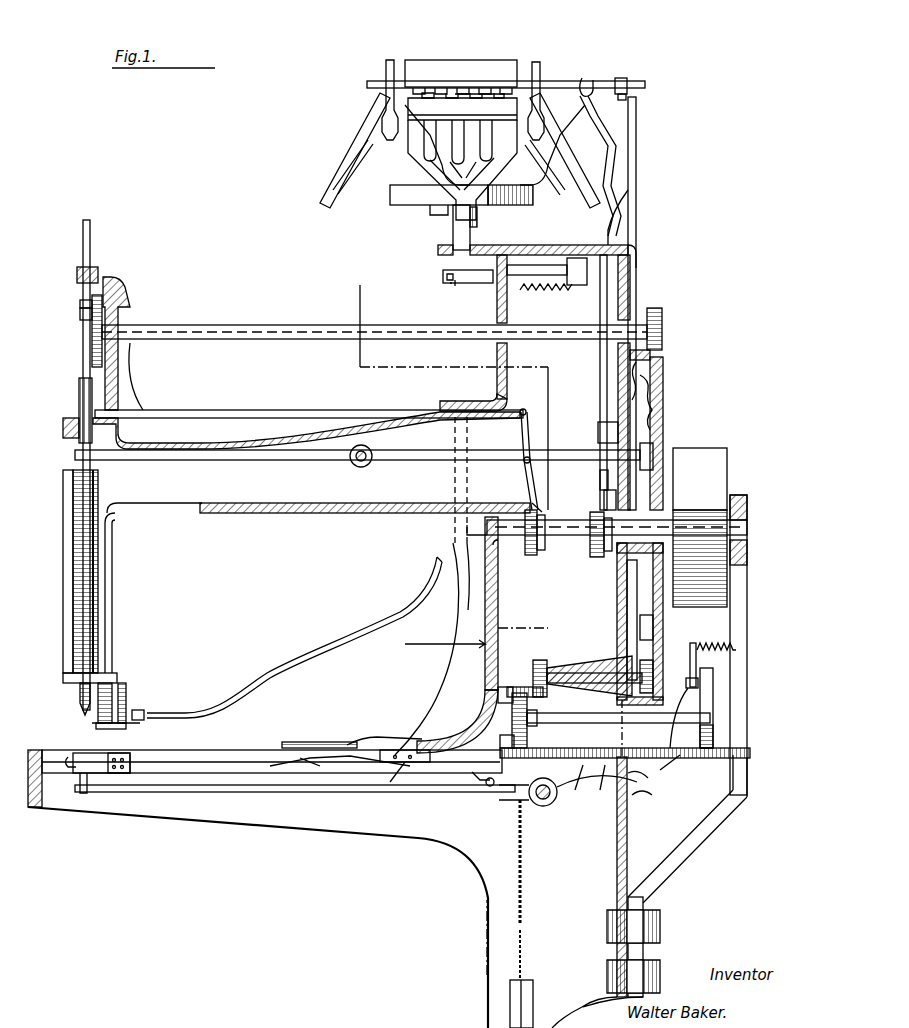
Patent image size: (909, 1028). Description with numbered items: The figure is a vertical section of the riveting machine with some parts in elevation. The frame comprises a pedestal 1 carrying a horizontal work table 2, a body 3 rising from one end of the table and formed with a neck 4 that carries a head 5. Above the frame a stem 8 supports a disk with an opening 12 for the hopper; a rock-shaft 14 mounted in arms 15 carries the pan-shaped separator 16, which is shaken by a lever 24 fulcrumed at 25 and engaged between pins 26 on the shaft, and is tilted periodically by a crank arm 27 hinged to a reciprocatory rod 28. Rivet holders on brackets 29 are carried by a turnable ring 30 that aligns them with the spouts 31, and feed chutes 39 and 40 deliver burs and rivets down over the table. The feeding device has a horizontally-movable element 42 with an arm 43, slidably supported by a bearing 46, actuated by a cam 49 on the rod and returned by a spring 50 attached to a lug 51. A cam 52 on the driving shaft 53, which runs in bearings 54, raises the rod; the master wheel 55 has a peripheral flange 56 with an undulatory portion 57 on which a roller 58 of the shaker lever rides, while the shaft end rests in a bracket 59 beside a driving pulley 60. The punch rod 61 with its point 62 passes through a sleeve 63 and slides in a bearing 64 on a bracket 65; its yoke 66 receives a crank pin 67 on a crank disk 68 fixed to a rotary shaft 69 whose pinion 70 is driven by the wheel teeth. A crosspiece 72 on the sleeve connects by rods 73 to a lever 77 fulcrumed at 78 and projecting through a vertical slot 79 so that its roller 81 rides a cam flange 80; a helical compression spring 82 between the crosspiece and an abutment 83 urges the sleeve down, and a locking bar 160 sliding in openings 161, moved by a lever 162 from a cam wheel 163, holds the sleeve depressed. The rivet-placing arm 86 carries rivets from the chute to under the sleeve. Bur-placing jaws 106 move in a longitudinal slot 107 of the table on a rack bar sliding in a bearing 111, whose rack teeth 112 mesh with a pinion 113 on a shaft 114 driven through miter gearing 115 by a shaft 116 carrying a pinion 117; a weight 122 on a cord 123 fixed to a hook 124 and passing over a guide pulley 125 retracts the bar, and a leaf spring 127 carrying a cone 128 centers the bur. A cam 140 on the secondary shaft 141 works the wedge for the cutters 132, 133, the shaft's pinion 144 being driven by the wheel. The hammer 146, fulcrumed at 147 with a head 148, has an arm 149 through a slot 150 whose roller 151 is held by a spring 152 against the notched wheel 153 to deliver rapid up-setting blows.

The pedestal 1 is at (485, 960).
The work table 2 is at (268, 824).
The body 3 is at (492, 903).
The neck 4 is at (322, 514).
The head 5 is at (113, 568).
The stem 8 is at (646, 615).
The opening 12 is at (641, 294).
The rock-shaft 14 is at (548, 82).
The arms 15 is at (460, 91).
The separator 16 is at (445, 62).
The lever 24 is at (640, 214).
The fulcrum 25 is at (638, 252).
The pins 26 is at (588, 78).
The crank arm 27 is at (624, 78).
The reciprocatory rod 28 is at (637, 141).
The brackets 29 is at (352, 186).
The ring 30 is at (403, 196).
The spouts 31 is at (470, 90).
The feed chute 39 is at (450, 536).
The feed chute 40 is at (472, 238).
The horizontally-movable element 42 is at (552, 258).
The arm 43 is at (460, 283).
The bearing 46 is at (575, 290).
The cam 49 is at (604, 292).
The spring 50 is at (574, 285).
The lug 51 is at (542, 303).
The cam 52 is at (600, 558).
The driving shaft 53 is at (555, 535).
The bearings 54 is at (508, 520).
The master wheel 55 is at (663, 412).
The peripheral flange 56 is at (646, 366).
The undulatory portion 57 is at (648, 394).
The roller 58 is at (652, 356).
The bracket 59 is at (748, 584).
The driving pulley 60 is at (710, 452).
The reciprocatory rod 61 is at (83, 358).
The point 62 is at (78, 706).
The sleeve 63 is at (80, 404).
The bearing 64 is at (77, 273).
The bracket 65 is at (137, 390).
The yoke 66 is at (82, 302).
The crank pin 67 is at (80, 312).
The crank disk 68 is at (115, 298).
The rotary shaft 69 is at (268, 340).
The pinion 70 is at (660, 312).
The crosspiece 72 is at (75, 686).
The rods 73 is at (63, 520).
The lever 77 is at (284, 460).
The fulcrum 78 is at (358, 466).
The vertical slot 79 is at (598, 428).
The flange 80 is at (655, 434).
The roller 81 is at (610, 475).
The helical compression spring 82 is at (95, 606).
The abutment 83 is at (63, 432).
The arm 86 is at (113, 730).
The jaws 106 is at (380, 740).
The longitudinal slot 107 is at (190, 768).
The bearing 111 is at (585, 775).
The rack teeth 112 is at (610, 775).
The pinion 113 is at (535, 738).
The shaft 114 is at (512, 720).
The miter gearing 115 is at (520, 687).
The shaft 116 is at (566, 672).
The pinion 117 is at (660, 660).
The weight 122 is at (528, 992).
The cord 123 is at (522, 866).
The hook 124 is at (450, 772).
The guide pulley 125 is at (490, 790).
The leaf spring 127 is at (324, 770).
The cone 128 is at (272, 752).
The cutter 132 is at (67, 764).
The cutter 133 is at (100, 773).
The cam 140 is at (505, 700).
The secondary shaft 141 is at (570, 716).
The pinion 144 is at (690, 770).
The hammer 146 is at (192, 795).
The fulcrum 147 is at (541, 806).
The head 148 is at (82, 786).
The arm 149 is at (645, 765).
The slot 150 is at (634, 798).
The roller 151 is at (686, 680).
The spring 152 is at (730, 656).
The wheel 153 is at (715, 700).
The locking bar 160 is at (224, 412).
The openings 161 is at (119, 430).
The lever 162 is at (524, 432).
The cam wheel 163 is at (545, 503).